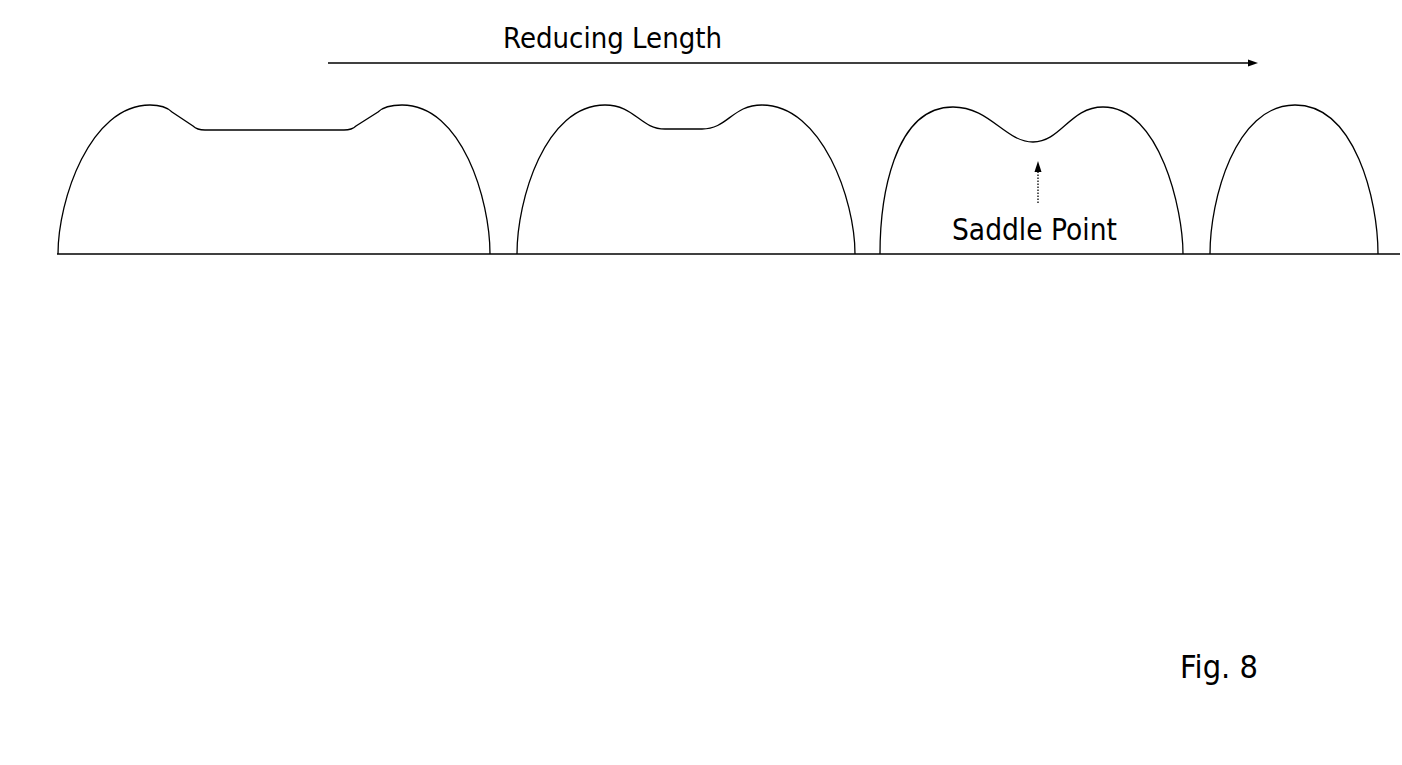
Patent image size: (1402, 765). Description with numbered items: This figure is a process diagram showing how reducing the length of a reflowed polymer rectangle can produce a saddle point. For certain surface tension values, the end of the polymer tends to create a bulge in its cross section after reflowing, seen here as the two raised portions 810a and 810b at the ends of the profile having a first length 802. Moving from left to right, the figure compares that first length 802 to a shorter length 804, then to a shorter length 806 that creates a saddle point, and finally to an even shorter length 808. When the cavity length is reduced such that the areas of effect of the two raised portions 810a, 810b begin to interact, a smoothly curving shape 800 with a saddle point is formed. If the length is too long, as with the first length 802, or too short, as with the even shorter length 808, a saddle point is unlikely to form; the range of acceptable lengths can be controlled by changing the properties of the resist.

The smoothly curving shape 800 is at (1019, 117).
The first length 802 is at (295, 180).
The shorter length 804 is at (658, 254).
The shorter length that creates a saddle point 806 is at (1045, 254).
The even shorter length 808 is at (1252, 254).
The raised portion 810a is at (167, 110).
The raised portion 810b is at (422, 110).